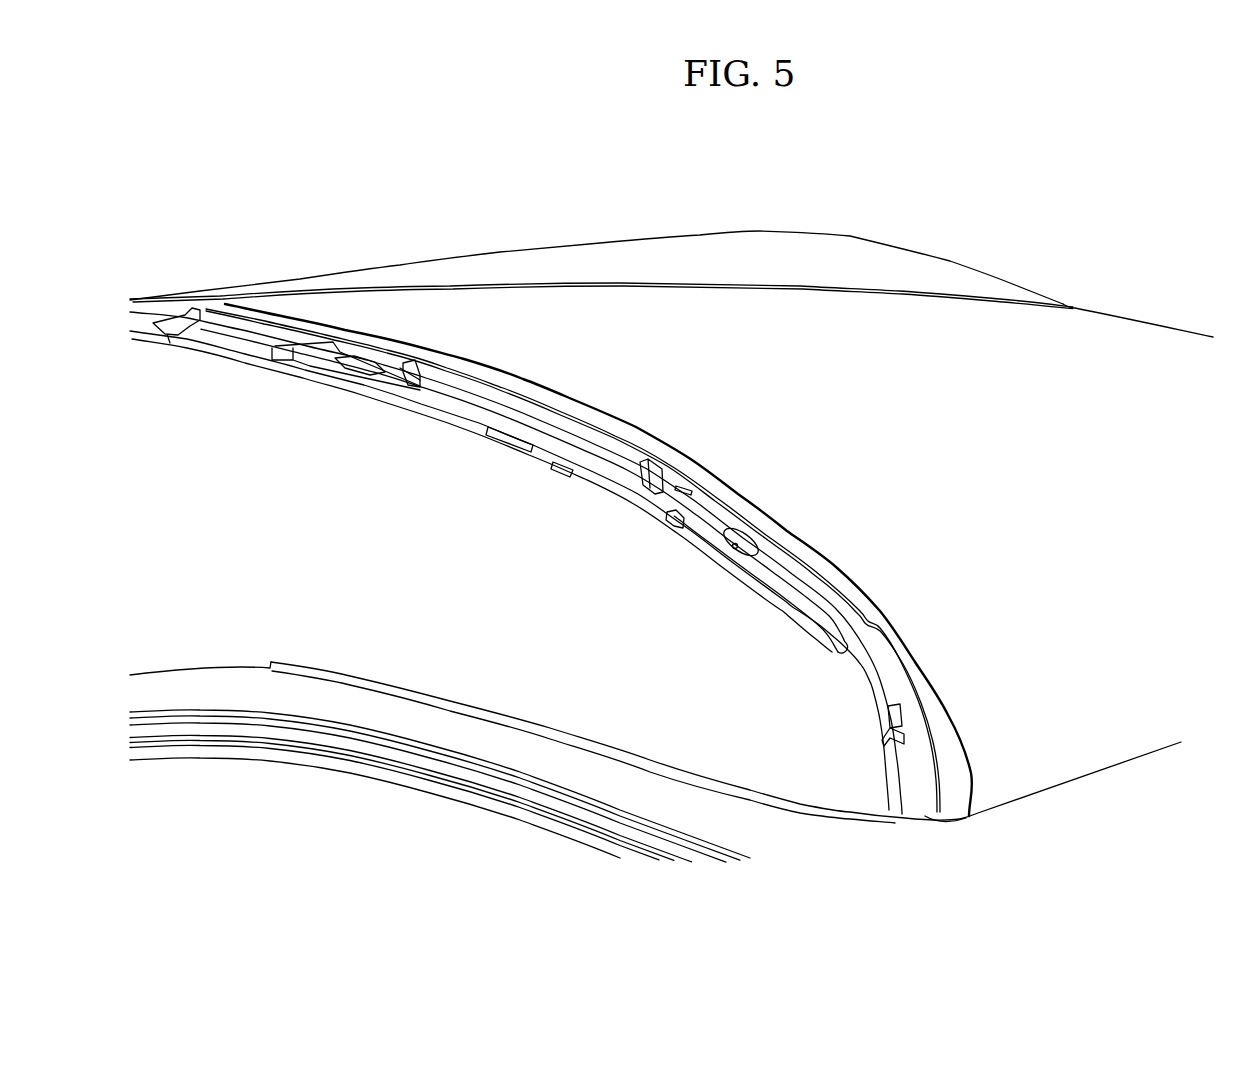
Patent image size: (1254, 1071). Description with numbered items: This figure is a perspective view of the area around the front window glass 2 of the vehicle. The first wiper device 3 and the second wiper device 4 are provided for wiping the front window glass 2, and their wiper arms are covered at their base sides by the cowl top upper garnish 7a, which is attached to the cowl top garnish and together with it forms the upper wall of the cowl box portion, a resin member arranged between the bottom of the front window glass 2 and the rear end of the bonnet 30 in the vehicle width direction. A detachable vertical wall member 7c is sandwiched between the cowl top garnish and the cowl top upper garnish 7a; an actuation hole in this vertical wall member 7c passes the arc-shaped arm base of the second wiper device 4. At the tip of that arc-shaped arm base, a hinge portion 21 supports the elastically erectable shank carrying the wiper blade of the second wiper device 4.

The front window glass 2 is at (469, 584).
The first wiper device 3 is at (460, 394).
The second wiper device 4 is at (877, 630).
The cowl top upper garnish 7a is at (940, 755).
The vertical wall member 7c is at (650, 468).
The hinge portion 21 is at (748, 550).
The bonnet 30 is at (859, 416).